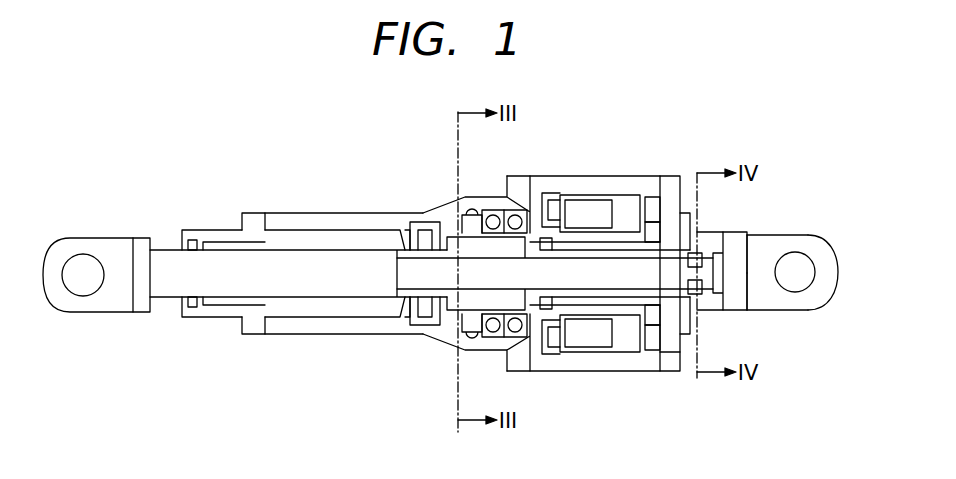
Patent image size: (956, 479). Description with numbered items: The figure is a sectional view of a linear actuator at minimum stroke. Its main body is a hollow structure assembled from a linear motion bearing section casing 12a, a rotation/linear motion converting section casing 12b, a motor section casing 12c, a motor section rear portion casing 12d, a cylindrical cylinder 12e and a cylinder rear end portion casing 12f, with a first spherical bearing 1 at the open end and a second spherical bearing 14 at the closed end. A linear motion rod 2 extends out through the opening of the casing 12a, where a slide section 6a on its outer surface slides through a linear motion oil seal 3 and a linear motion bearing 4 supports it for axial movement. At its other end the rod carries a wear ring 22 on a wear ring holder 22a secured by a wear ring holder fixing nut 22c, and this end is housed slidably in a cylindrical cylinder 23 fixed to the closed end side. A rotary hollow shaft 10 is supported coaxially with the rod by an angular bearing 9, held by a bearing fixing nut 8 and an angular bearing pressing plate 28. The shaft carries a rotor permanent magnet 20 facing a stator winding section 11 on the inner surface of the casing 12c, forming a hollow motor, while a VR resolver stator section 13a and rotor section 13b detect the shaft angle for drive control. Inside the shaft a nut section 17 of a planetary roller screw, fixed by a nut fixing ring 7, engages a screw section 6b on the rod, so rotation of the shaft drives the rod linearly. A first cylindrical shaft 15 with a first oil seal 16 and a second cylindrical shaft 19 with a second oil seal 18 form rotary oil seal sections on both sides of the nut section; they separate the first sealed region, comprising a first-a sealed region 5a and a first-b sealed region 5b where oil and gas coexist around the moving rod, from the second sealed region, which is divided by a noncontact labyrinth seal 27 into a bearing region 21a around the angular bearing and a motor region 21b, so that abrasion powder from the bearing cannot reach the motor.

The first spherical bearing 1 is at (118, 243).
The linear motion rod 2 is at (170, 228).
The linear motion oil seal 3 is at (193, 240).
The linear motion bearing 4 is at (219, 242).
The first-a sealed region 5a is at (323, 230).
The first-b sealed region 5b is at (815, 240).
The slide section 6a is at (216, 292).
The screw section 6b is at (398, 252).
The nut fixing ring 7 is at (418, 232).
The bearing fixing nut 8 is at (468, 222).
The angular bearing 9 is at (488, 330).
The rotary hollow shaft 10 is at (520, 222).
The stator winding section 11 is at (590, 195).
The linear motion bearing section casing 12a is at (254, 220).
The rotation/linear motion converting section casing 12b is at (313, 334).
The motor section casing 12c is at (607, 176).
The motor section rear portion casing 12d is at (676, 176).
The cylindrical cylinder 12e is at (712, 242).
The cylinder rear end portion casing 12f is at (770, 307).
The VR resolver stator section 13a is at (655, 232).
The VR resolver rotor section 13b is at (650, 205).
The second spherical bearing 14 is at (820, 235).
The first cylindrical shaft 15 is at (415, 303).
The first oil seal 16 is at (428, 325).
The nut section 17 is at (463, 315).
The second oil seal 18 is at (546, 312).
The second cylindrical shaft 19 is at (568, 340).
The rotor permanent magnet 20 is at (605, 345).
The bearing region 21a is at (440, 245).
The motor region 21b is at (636, 330).
The wear ring 22 is at (700, 296).
The wear ring holder 22a is at (733, 300).
The wear ring holder fixing nut 22c is at (735, 262).
The cylindrical cylinder 23 is at (665, 360).
The noncontact labyrinth seal 27 is at (548, 215).
The angular bearing pressing plate 28 is at (540, 352).